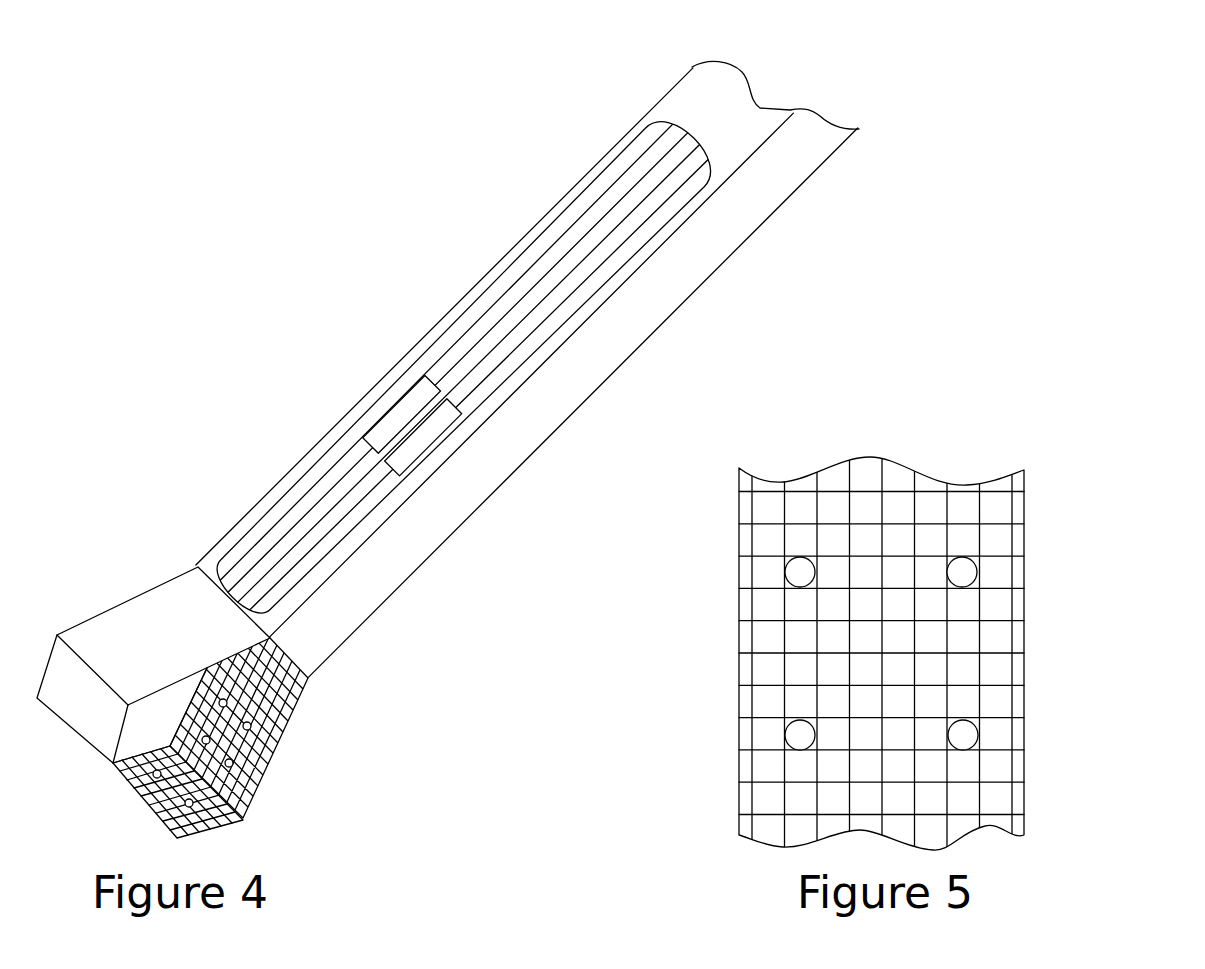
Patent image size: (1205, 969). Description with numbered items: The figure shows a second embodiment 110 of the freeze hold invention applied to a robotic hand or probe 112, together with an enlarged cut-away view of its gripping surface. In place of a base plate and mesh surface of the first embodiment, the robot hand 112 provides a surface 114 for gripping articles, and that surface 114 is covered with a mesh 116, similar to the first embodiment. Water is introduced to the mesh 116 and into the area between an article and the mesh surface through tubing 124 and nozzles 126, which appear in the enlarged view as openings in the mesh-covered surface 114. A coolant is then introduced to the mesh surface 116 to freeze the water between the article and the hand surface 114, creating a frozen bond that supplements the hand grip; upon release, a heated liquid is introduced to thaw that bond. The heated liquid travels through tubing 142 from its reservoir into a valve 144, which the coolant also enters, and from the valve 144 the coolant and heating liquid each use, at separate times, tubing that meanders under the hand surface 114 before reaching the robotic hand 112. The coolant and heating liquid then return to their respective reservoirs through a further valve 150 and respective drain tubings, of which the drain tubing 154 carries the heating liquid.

In FIG. 4, the second embodiment 110 is at (212, 436).
In FIG. 4, the robotic hand 112 is at (133, 627).
In FIG. 5, the robotic hand 112 is at (1026, 773).
In FIG. 4, the surface 114 is at (274, 704).
In FIG. 5, the surface 114 is at (1026, 508).
In FIG. 4, the mesh 116 is at (230, 761).
In FIG. 5, the mesh 116 is at (977, 640).
In FIG. 4, the tubing 124 is at (327, 533).
In FIG. 5, the nozzles 126 is at (965, 737).
In FIG. 4, the tubing 142 is at (608, 253).
In FIG. 4, the valve 144 is at (440, 423).
In FIG. 4, the valve 150 is at (395, 421).
In FIG. 4, the drain tubing 154 is at (583, 226).